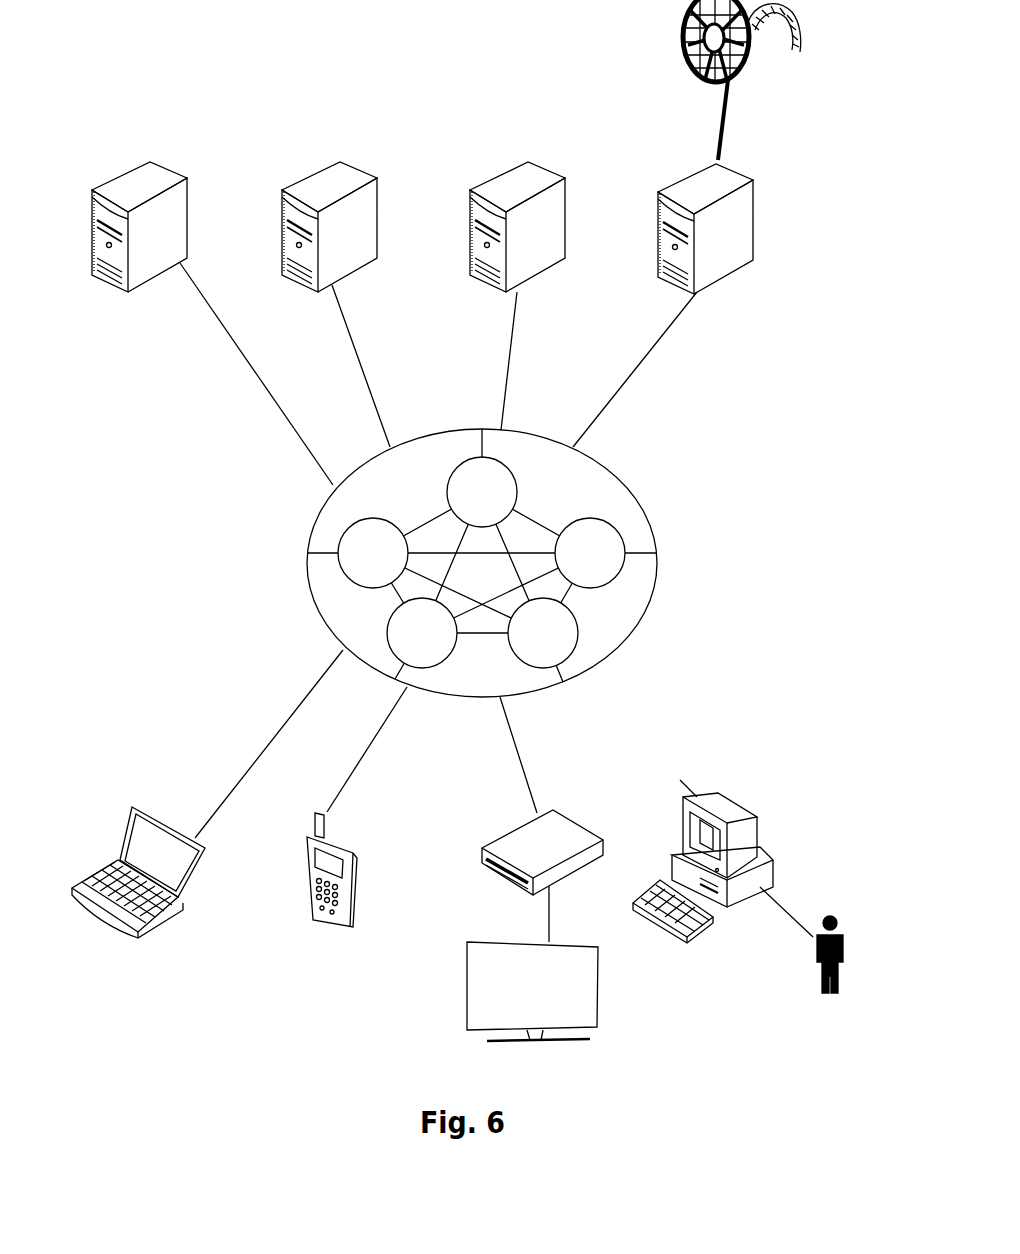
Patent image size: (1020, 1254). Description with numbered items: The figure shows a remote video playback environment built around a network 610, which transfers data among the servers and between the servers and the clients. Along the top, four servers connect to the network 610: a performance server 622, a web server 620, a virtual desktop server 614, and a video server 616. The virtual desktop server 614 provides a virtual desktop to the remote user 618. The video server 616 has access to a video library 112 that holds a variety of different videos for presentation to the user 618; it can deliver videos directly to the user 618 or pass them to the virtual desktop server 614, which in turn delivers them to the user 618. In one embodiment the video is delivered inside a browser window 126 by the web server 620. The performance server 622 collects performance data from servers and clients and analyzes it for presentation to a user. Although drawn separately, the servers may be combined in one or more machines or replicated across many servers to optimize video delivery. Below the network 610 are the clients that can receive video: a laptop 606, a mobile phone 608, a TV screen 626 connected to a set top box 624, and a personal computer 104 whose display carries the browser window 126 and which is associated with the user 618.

The video library 112 is at (685, 47).
The video server 616 is at (738, 218).
The virtual desktop server 614 is at (520, 178).
The web server 620 is at (338, 180).
The performance server 622 is at (150, 178).
The network 610 is at (640, 585).
The laptop 606 is at (158, 848).
The mobile phone 608 is at (313, 870).
The set top box 624 is at (513, 845).
The TV screen 626 is at (483, 1013).
The browser window 126 is at (705, 843).
The personal computer 104 is at (753, 830).
The remote user 618 is at (842, 997).